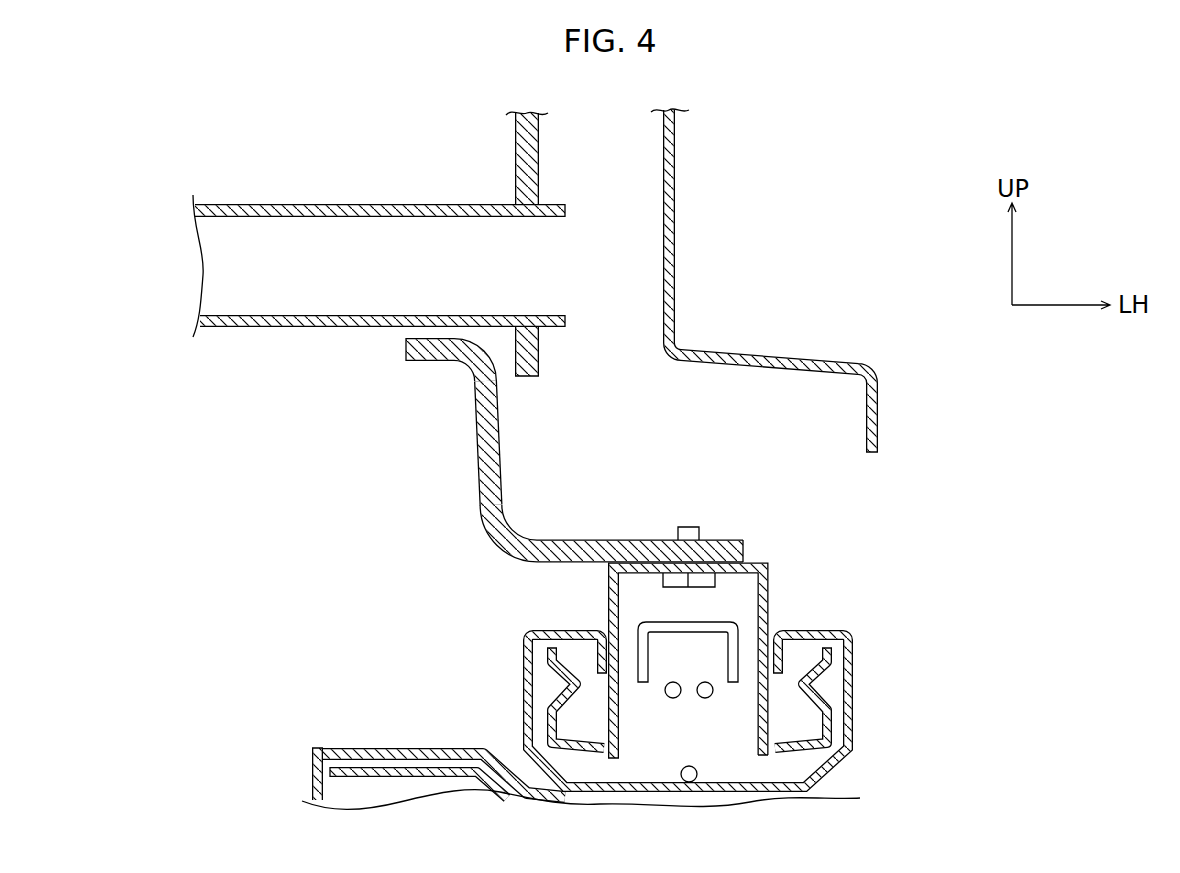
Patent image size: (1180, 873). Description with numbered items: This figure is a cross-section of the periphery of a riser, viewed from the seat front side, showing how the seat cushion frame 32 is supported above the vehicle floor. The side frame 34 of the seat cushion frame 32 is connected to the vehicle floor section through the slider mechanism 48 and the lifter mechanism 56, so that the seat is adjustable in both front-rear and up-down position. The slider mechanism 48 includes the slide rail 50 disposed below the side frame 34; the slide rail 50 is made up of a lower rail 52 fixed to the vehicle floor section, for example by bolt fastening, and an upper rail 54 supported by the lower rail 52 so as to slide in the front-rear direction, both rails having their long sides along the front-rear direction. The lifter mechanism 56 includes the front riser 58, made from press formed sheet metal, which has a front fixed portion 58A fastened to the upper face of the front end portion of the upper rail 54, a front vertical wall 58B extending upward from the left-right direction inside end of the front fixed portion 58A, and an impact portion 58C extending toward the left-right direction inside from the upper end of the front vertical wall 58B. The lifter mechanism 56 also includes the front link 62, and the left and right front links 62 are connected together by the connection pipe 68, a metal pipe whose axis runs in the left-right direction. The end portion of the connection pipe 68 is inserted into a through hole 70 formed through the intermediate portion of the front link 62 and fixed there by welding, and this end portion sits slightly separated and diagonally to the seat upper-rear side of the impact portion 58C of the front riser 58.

The seat cushion frame 32 is at (764, 280).
The side frame 34 is at (675, 192).
The slider mechanism 48 is at (706, 668).
The slide rail 50 is at (868, 729).
The lower rail 52 is at (523, 668).
The upper rail 54 is at (771, 603).
The lifter mechanism 56 is at (242, 360).
The front riser 58 is at (549, 450).
The front fixed portion 58A is at (598, 540).
The front vertical wall 58B is at (502, 424).
The impact portion 58C is at (430, 362).
The front link 62 is at (515, 150).
The connection pipe 68 is at (303, 204).
The through hole 70 is at (528, 212).